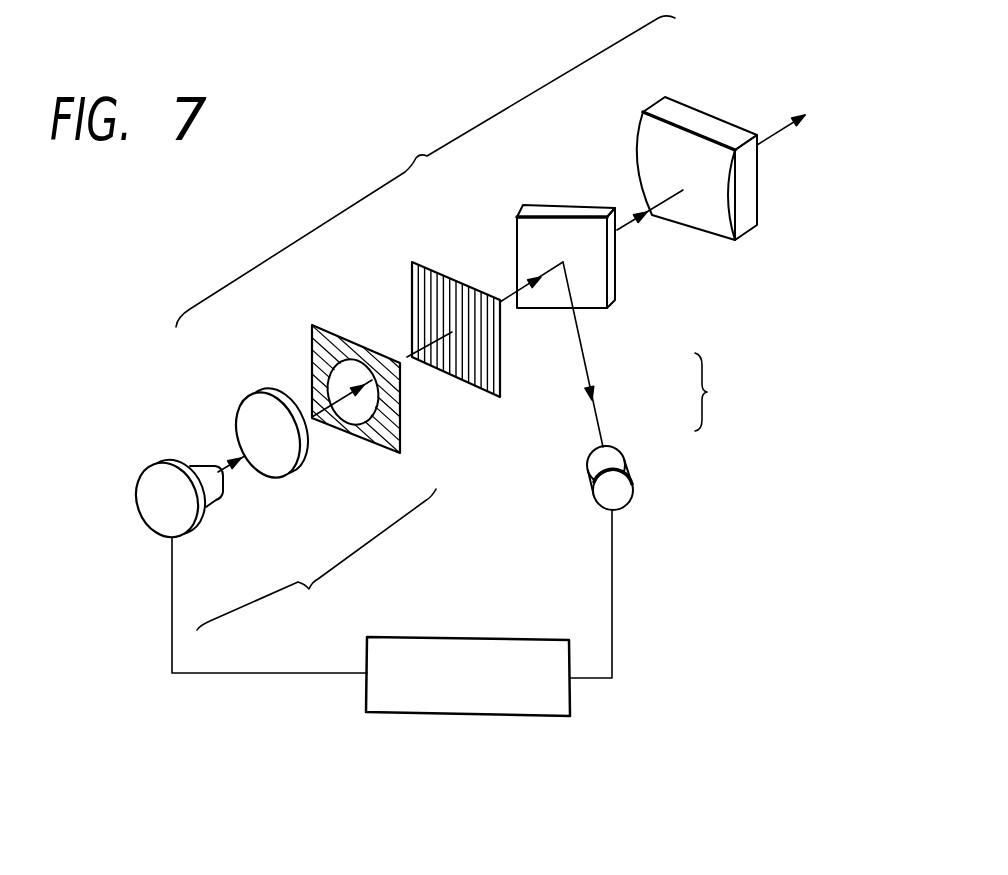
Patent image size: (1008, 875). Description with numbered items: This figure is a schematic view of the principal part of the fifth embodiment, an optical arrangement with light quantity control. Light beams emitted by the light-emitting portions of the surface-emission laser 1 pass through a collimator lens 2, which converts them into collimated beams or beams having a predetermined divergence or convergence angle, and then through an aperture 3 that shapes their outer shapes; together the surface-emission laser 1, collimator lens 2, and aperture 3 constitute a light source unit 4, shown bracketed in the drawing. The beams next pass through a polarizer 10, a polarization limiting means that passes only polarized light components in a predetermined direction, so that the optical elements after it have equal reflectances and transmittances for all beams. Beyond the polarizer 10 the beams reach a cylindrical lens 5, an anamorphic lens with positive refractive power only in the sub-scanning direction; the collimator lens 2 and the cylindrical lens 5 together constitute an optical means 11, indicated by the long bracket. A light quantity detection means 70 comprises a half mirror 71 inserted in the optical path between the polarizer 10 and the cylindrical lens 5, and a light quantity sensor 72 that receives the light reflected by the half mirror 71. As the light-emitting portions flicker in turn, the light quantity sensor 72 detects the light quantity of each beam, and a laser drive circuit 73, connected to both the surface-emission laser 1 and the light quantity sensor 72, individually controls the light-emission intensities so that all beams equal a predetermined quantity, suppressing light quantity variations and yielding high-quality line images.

The surface-emission laser 1 is at (192, 537).
The collimator lens 2 is at (287, 473).
The aperture 3 is at (373, 445).
The light source unit 4 is at (316, 559).
The cylindrical lens 5 is at (713, 225).
The polarizer 10 is at (475, 392).
The optical means 11 is at (425, 171).
The light quantity detection means 70 is at (718, 392).
The half mirror 71 is at (602, 310).
The light quantity sensor 72 is at (620, 462).
The laser drive circuit 73 is at (570, 705).